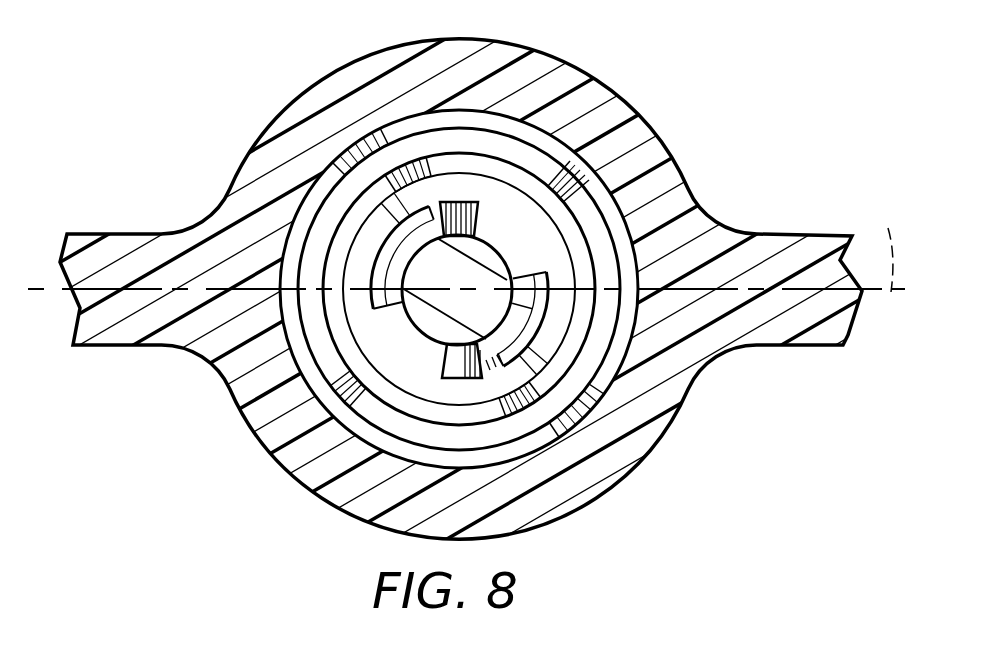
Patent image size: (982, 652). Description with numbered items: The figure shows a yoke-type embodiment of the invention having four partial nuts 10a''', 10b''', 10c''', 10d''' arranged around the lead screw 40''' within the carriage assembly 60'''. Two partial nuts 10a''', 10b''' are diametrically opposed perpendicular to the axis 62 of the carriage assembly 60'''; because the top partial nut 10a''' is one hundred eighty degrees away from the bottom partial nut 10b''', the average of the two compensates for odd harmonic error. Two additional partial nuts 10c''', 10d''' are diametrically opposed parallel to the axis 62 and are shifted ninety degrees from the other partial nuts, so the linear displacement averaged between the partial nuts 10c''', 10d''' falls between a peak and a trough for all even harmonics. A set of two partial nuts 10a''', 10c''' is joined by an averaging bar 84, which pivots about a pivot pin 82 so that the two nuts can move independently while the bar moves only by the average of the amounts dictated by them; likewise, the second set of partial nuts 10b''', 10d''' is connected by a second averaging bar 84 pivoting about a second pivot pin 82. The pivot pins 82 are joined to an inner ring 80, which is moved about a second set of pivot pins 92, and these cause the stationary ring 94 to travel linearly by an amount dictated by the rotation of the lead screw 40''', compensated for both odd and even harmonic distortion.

The partial nut 10a''' is at (495, 219).
The partial nut 10b''' is at (447, 366).
The partial nut 10c''' is at (396, 274).
The partial nut 10d''' is at (535, 304).
The lead screw 40''' is at (444, 301).
The carriage assembly 60''' is at (461, 289).
The axis 62 is at (888, 228).
The inner ring 80 is at (697, 369).
The pivot pin 82 is at (398, 157).
The averaging bar 84 is at (335, 235).
The pivot pin 92 is at (562, 158).
The stationary ring 94 is at (367, 429).